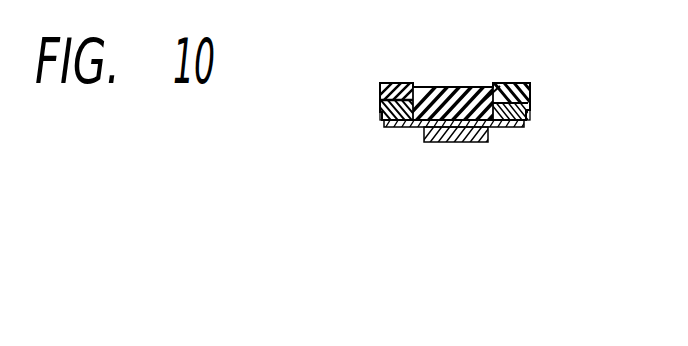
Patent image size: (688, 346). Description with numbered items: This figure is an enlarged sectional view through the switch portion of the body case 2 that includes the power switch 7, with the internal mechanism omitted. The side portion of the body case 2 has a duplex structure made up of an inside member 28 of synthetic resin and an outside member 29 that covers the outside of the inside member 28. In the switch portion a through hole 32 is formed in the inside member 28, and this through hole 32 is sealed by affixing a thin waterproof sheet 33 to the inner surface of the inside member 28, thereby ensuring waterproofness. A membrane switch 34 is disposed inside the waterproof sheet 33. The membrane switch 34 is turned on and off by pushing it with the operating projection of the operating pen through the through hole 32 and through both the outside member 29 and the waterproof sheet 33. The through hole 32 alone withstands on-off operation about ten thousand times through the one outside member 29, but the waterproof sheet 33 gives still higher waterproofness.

The body case 2 is at (393, 82).
The power switch 7 is at (443, 86).
The through hole 32 is at (484, 100).
The outside member 29 is at (518, 83).
The inside member 28 is at (531, 108).
The waterproof sheet 33 is at (403, 128).
The membrane switch 34 is at (453, 142).